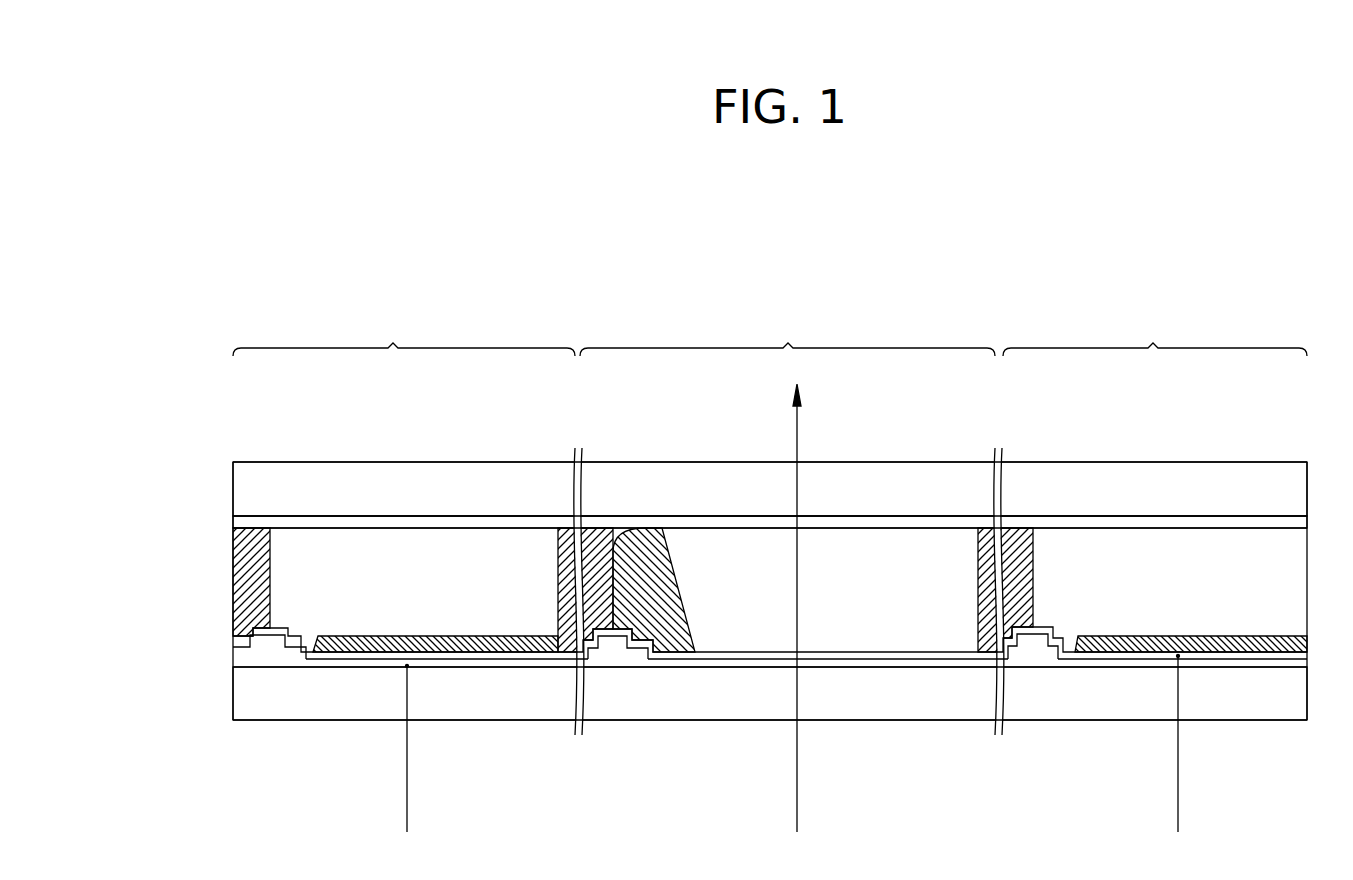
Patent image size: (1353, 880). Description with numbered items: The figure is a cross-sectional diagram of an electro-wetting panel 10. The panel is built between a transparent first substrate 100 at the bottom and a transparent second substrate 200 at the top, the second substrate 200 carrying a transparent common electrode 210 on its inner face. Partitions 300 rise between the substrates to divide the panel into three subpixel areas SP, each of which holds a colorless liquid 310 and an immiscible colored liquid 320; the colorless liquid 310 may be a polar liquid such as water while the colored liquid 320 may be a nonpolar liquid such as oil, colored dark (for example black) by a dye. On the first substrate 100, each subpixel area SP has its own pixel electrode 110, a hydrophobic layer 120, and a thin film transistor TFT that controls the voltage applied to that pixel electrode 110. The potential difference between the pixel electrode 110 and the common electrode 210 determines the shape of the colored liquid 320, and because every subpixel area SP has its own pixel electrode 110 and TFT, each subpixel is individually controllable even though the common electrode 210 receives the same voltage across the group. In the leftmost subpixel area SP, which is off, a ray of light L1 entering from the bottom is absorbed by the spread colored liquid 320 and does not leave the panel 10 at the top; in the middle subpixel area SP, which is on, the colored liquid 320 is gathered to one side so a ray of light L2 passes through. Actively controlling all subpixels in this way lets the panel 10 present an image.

The electro-wetting panel 10 is at (590, 312).
The first substrate 100 is at (232, 697).
The pixel electrode 110 is at (356, 667).
The hydrophobic layer 120 is at (514, 660).
The second substrate 200 is at (297, 478).
The transparent common electrode 210 is at (447, 523).
The partition 300 is at (601, 530).
The colorless liquid 310 is at (1208, 604).
The colored liquid 320 is at (438, 655).
The thin film transistor TFT is at (269, 658).
The subpixel area SP is at (770, 335).
The ray of light L1 is at (407, 820).
The ray of light L2 is at (797, 420).